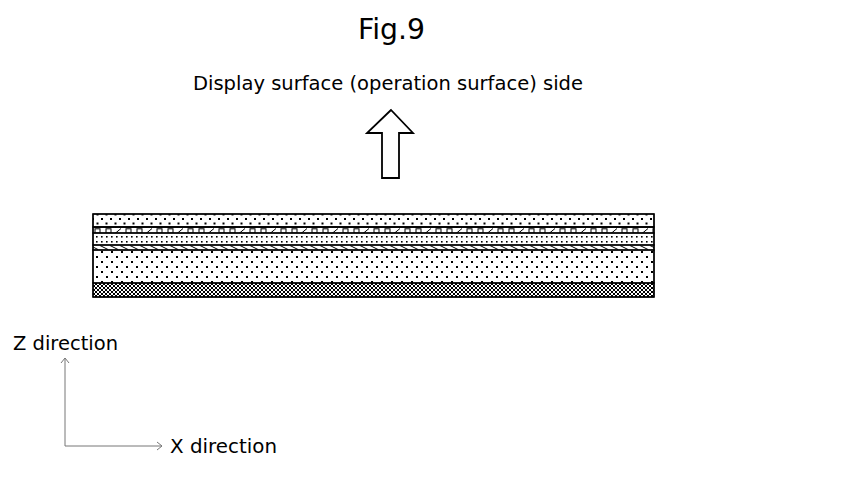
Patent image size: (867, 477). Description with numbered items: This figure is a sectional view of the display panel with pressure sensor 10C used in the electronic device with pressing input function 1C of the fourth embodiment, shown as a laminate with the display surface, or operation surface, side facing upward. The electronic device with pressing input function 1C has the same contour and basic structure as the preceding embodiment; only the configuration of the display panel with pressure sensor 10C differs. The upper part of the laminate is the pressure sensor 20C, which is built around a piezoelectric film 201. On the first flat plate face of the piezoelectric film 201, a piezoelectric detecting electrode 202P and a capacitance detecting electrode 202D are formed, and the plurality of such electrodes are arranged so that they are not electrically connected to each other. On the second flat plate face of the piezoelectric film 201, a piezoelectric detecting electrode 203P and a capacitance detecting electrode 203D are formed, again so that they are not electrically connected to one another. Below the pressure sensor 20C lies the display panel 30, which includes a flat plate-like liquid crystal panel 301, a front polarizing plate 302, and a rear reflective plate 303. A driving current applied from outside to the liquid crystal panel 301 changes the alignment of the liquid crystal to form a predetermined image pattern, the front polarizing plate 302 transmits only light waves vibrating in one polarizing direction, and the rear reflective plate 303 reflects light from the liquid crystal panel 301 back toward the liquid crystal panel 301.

The electronic device with pressing input function 1C is at (182, 169).
The display panel with pressure sensor 10C is at (582, 191).
The pressure sensor 20C is at (788, 187).
The capacitance detecting electrode 202D is at (608, 224).
The piezoelectric detecting electrode 202P is at (655, 231).
The piezoelectric film 201 is at (655, 239).
The piezoelectric detecting electrode 203P is at (441, 258).
The capacitance detecting electrode 203D is at (655, 249).
The display panel 30 is at (34, 230).
The front polarizing plate 302 is at (99, 224).
The liquid crystal panel 301 is at (100, 267).
The rear reflective plate 303 is at (100, 288).